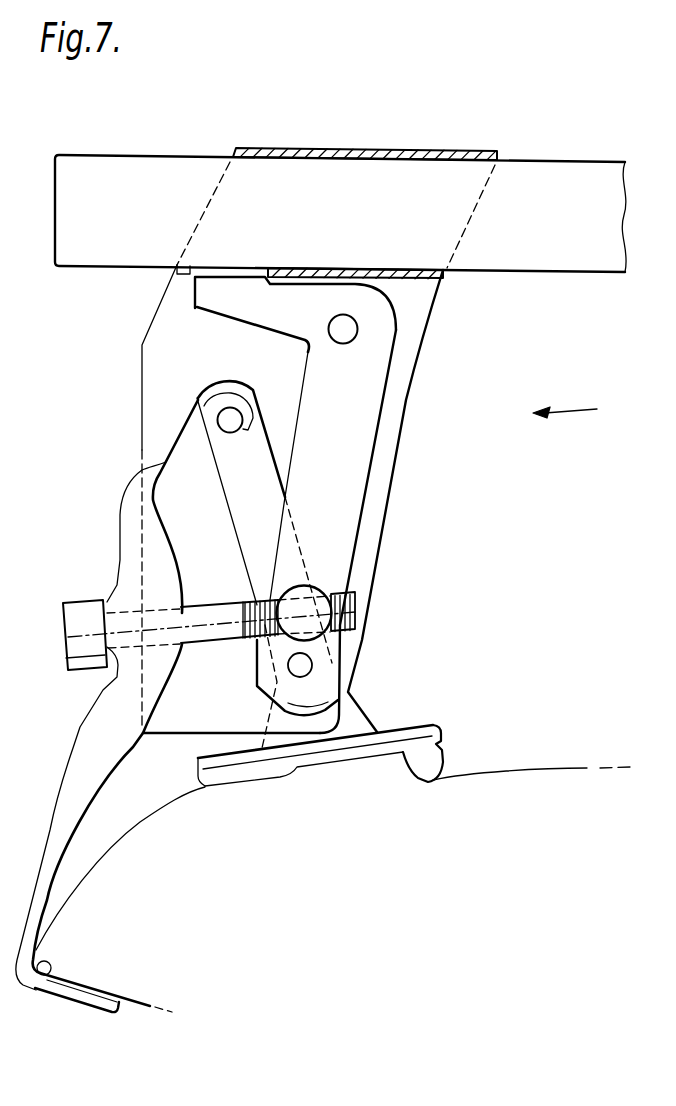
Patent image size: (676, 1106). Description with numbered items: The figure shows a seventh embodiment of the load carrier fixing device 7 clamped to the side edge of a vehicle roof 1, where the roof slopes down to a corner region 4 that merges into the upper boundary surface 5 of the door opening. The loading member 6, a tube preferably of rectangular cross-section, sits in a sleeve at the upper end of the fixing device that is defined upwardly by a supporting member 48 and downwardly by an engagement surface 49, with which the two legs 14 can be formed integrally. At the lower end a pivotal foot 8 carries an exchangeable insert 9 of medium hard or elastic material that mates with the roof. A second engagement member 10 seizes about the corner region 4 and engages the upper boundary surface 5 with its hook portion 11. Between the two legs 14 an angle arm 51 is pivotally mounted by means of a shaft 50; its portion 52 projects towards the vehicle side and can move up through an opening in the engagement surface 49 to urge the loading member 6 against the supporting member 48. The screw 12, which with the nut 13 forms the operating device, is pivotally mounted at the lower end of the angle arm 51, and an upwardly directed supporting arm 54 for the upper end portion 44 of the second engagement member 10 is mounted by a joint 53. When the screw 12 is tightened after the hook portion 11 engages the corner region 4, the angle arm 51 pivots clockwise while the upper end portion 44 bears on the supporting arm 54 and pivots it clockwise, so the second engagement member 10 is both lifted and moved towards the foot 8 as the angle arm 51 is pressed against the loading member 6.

The vehicle roof 1 is at (530, 768).
The corner region 4 is at (50, 978).
The upper boundary surface 5 is at (130, 1006).
The loading member 6 is at (156, 157).
The fixing device 7 is at (579, 406).
The foot 8 is at (383, 732).
The exchangeable insert 9 is at (428, 766).
The second engagement member 10 is at (77, 745).
The hook portion 11 is at (85, 1005).
The screw 12 is at (95, 582).
The nut 13 is at (350, 603).
The legs 14 is at (387, 514).
The upper end portion 44 is at (233, 405).
The supporting member 48 is at (352, 148).
The engagement surface 49 is at (410, 280).
The shaft 50 is at (345, 330).
The angle arm 51 is at (372, 465).
The portion 52 is at (205, 297).
The joint 53 is at (312, 665).
The supporting arm 54 is at (227, 477).